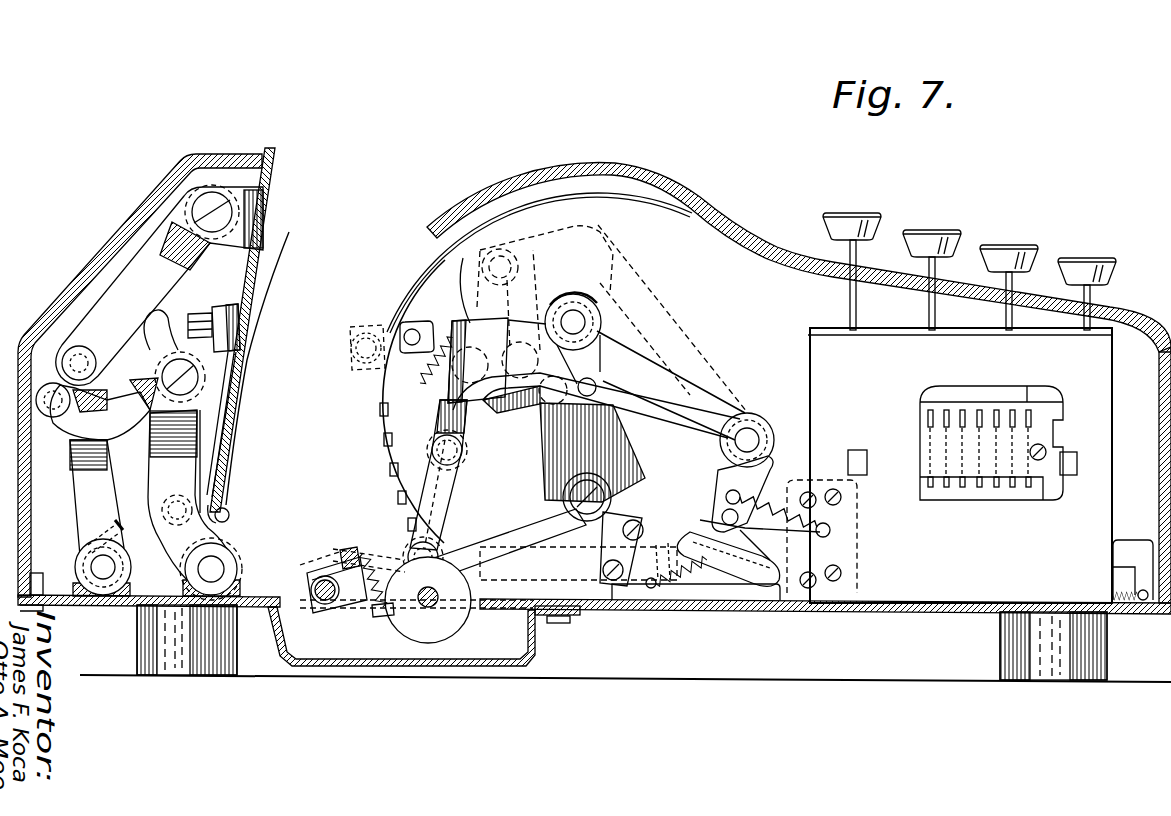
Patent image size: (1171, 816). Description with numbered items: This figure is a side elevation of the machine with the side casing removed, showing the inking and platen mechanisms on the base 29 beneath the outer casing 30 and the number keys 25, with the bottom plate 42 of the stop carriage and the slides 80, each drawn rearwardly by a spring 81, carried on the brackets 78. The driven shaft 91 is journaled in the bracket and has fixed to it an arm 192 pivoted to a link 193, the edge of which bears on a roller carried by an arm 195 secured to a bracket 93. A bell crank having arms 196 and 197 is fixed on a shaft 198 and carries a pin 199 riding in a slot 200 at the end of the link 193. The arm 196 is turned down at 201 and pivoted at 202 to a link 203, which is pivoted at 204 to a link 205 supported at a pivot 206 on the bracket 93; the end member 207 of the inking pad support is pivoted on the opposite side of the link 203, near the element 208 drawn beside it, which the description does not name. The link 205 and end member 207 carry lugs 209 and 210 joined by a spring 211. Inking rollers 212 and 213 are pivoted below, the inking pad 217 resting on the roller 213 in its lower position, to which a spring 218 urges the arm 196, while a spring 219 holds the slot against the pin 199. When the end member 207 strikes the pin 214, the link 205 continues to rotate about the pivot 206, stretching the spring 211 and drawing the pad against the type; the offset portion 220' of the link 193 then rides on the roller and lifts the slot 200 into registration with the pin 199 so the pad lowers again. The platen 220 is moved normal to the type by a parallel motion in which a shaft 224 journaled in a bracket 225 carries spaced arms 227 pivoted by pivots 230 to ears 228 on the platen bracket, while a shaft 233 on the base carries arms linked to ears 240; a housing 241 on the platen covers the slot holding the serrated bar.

The number keys 25 is at (1080, 258).
The base 29 is at (922, 603).
The outer casing 30 is at (1163, 466).
The bottom plate 42 is at (1007, 478).
The brackets 78 is at (561, 497).
The slides 80 is at (1126, 552).
The spring 81 is at (1128, 600).
The shaft 91 is at (575, 320).
The bracket 93 is at (640, 590).
The arm 192 is at (577, 367).
The link 193 is at (600, 437).
The arm 195 is at (623, 533).
The arm 196 is at (653, 413).
The arm 197 is at (747, 483).
The shaft 198 is at (760, 413).
The pin 199 is at (745, 529).
The slot 200 is at (770, 558).
The turned-down portion 201 is at (446, 447).
The pivot 202 is at (449, 458).
The link 203 is at (437, 490).
The pivot 204 is at (407, 550).
The link 205 is at (502, 548).
The pivot 206 is at (587, 518).
The end member 207 is at (353, 608).
The pin 208 is at (311, 582).
The lug 209 is at (373, 560).
The lug 210 is at (393, 612).
The spring 211 is at (375, 614).
The feed roller 212 is at (453, 622).
The direct inking roller 213 is at (339, 560).
The pin 214 is at (408, 338).
The inking pad 217 is at (317, 548).
The spring 218 is at (830, 528).
The spring 219 is at (685, 582).
The platen 220 is at (249, 335).
The offset portion 220' is at (728, 600).
The shaft 224 is at (214, 568).
The bracket 225 is at (233, 593).
The arms 227 is at (180, 461).
The ears 228 is at (160, 380).
The pivots 230 is at (163, 366).
The shaft 233 is at (100, 565).
The ears 240 is at (243, 212).
The housing 241 is at (233, 305).